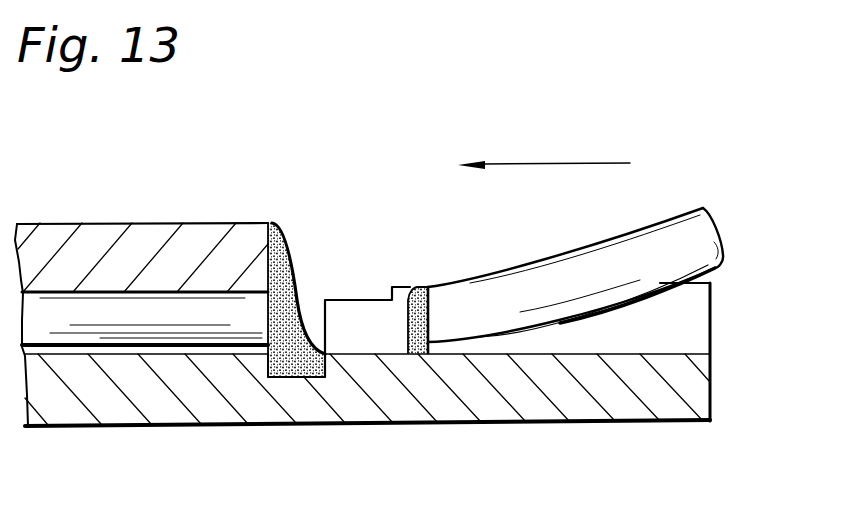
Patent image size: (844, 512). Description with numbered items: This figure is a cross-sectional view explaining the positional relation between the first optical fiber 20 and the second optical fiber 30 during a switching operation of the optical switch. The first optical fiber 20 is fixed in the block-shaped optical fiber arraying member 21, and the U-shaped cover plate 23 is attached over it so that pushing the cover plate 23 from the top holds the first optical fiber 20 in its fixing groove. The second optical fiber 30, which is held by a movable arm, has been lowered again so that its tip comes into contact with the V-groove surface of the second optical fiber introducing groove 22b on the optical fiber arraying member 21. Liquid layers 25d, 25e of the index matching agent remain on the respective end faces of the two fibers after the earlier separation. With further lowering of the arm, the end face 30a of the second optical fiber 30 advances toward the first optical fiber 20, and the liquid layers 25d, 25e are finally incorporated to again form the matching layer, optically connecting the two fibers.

The first optical fiber 20 is at (62, 325).
The optical fiber arraying member 21 is at (152, 402).
The second optical fiber introducing groove 22b is at (712, 322).
The cover plate 23 is at (192, 247).
The liquid layer 25d is at (288, 358).
The liquid layer 25e is at (412, 290).
The second optical fiber 30 is at (702, 230).
The end face 30a is at (432, 313).